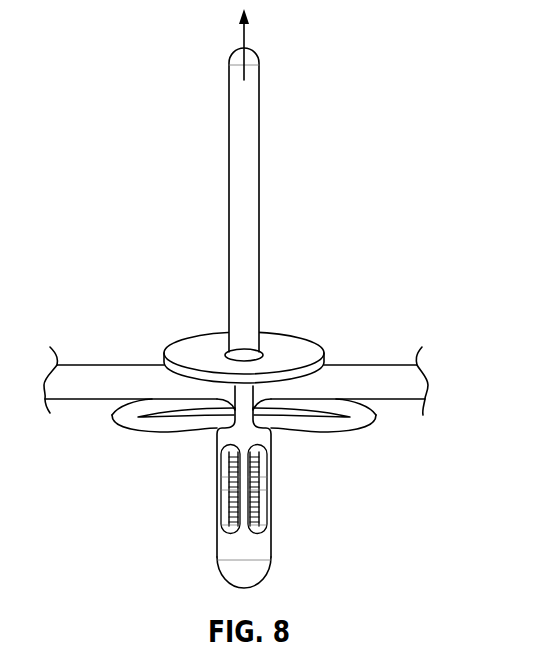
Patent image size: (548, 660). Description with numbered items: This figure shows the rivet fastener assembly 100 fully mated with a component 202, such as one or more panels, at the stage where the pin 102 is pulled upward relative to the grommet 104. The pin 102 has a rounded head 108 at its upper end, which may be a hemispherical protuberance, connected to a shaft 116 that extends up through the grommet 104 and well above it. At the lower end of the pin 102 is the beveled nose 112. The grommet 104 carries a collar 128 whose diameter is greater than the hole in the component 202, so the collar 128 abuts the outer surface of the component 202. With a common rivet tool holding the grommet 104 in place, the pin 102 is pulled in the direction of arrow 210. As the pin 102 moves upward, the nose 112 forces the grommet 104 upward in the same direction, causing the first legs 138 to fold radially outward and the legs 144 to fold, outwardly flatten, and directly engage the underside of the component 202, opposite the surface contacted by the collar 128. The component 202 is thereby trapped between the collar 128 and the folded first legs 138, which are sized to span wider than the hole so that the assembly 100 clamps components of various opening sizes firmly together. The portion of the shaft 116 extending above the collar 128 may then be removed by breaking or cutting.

The rivet fastener assembly 100 is at (222, 311).
The pin 102 is at (240, 204).
The grommet 104 is at (255, 501).
The rounded head 108 is at (259, 58).
The beveled nose 112 is at (252, 575).
The shaft 116 is at (253, 290).
The collar 128 is at (184, 352).
The first legs 138 is at (112, 421).
The legs 144 is at (243, 510).
The component 202 is at (370, 378).
The arrow 210 is at (247, 30).